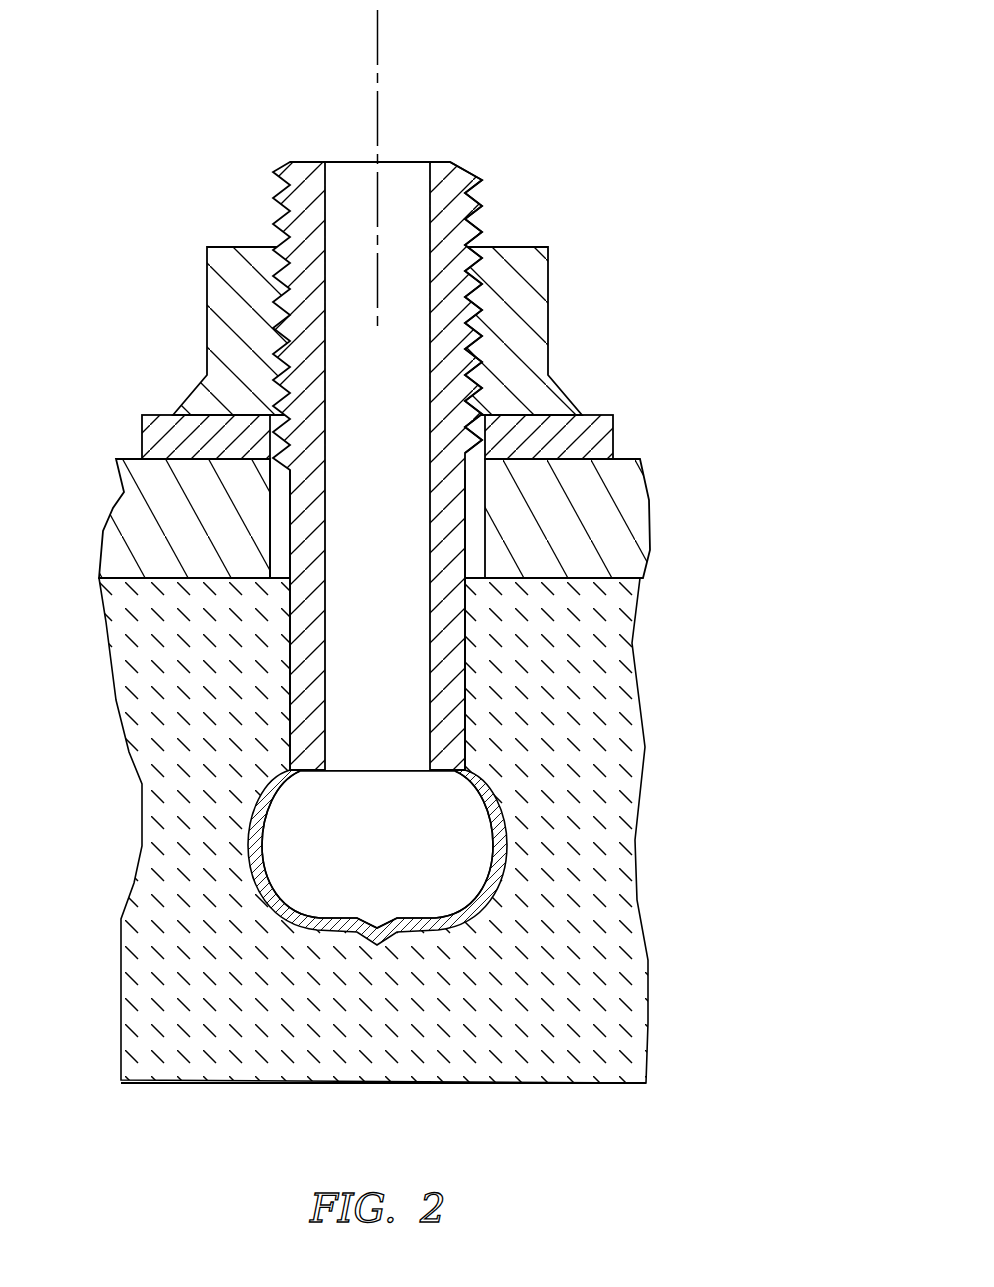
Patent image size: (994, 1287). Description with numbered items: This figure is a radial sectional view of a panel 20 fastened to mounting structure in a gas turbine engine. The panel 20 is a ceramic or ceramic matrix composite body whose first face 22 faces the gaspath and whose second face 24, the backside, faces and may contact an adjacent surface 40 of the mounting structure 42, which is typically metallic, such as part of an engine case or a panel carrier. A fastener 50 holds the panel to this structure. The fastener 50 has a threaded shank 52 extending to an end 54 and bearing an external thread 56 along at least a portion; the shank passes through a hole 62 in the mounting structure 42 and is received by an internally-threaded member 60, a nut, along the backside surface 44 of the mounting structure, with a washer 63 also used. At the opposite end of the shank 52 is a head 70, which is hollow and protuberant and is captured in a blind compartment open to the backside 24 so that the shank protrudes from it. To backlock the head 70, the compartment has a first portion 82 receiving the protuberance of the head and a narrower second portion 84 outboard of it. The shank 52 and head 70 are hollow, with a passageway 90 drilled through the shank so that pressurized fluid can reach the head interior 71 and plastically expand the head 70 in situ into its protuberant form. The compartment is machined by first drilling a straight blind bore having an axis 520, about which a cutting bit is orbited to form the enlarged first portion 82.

The panel 20 is at (598, 828).
The first face 22 is at (570, 1083).
The second face 24 is at (613, 577).
The adjacent surface 40 is at (585, 598).
The mounting structure 42 is at (608, 511).
The backside surface 44 is at (170, 445).
The fastener 50 is at (497, 220).
The shank 52 is at (460, 638).
The end 54 is at (308, 162).
The external thread 56 is at (480, 208).
The internally-threaded member 60 is at (537, 312).
The hole 62 is at (282, 513).
The washer 63 is at (590, 437).
The head 70 is at (473, 912).
The head interior 71 is at (400, 855).
The first portion 82 is at (497, 833).
The second portion 84 is at (302, 657).
The passageway 90 is at (399, 406).
The axis 520 is at (377, 34).